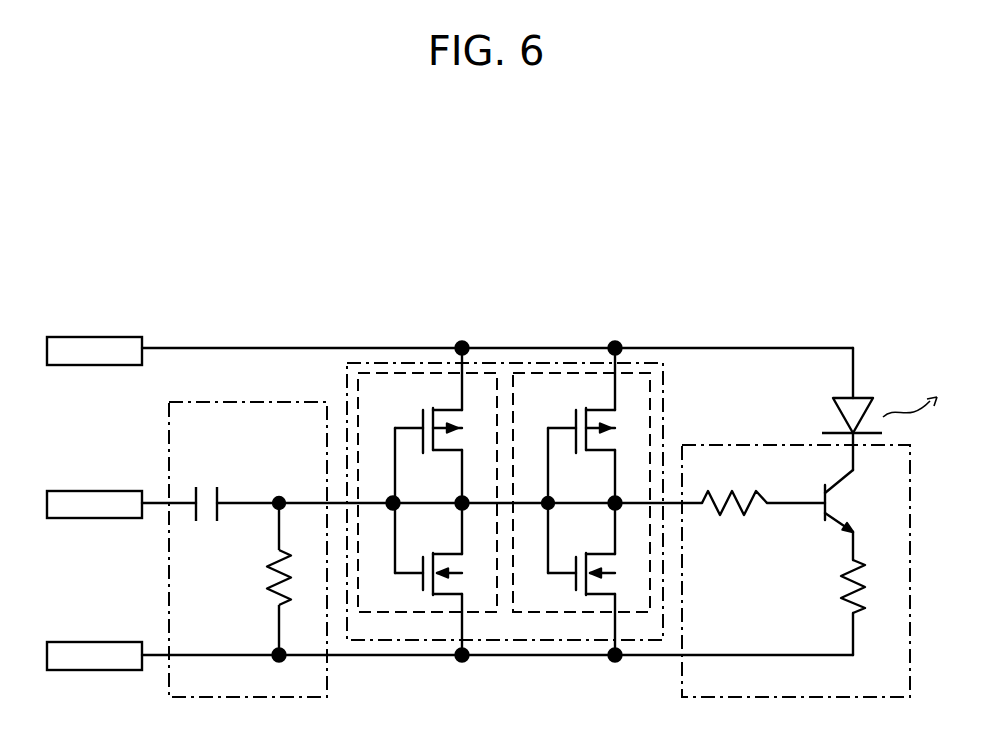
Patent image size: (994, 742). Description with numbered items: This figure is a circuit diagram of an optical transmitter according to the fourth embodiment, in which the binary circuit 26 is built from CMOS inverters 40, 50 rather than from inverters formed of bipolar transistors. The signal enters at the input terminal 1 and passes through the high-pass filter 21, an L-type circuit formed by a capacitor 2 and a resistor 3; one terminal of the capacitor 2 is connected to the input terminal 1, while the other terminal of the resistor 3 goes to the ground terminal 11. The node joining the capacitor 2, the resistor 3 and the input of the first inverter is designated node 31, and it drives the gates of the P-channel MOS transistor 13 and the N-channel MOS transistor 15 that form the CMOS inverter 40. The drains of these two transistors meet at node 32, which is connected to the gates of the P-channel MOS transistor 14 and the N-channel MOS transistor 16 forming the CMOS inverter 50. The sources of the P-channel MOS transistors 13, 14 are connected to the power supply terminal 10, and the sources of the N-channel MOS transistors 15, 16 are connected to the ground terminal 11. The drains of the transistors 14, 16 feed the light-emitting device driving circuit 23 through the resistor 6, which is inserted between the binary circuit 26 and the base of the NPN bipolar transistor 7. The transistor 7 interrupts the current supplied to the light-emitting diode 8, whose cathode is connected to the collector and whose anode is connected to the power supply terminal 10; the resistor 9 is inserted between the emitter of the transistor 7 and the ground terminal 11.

The input terminal 1 is at (94, 487).
The power supply terminal 10 is at (94, 334).
The ground terminal 11 is at (94, 639).
The capacitor 2 is at (206, 486).
The resistor 3 is at (264, 579).
The node 31 is at (278, 488).
The node 32 is at (565, 488).
The P-channel MOS transistor 13 is at (421, 425).
The P-channel MOS transistor 14 is at (575, 425).
The N-channel MOS transistor 15 is at (421, 579).
The N-channel MOS transistor 16 is at (575, 579).
The high-pass filter 21 is at (243, 400).
The binary circuit 26 is at (380, 363).
The CMOS inverter 40 is at (440, 615).
The CMOS inverter 50 is at (590, 615).
The light-emitting device driving circuit 23 is at (705, 445).
The resistor 6 is at (734, 485).
The NPN bipolar transistor 7 is at (856, 501).
The light-emitting diode 8 is at (867, 415).
The resistor 9 is at (865, 586).